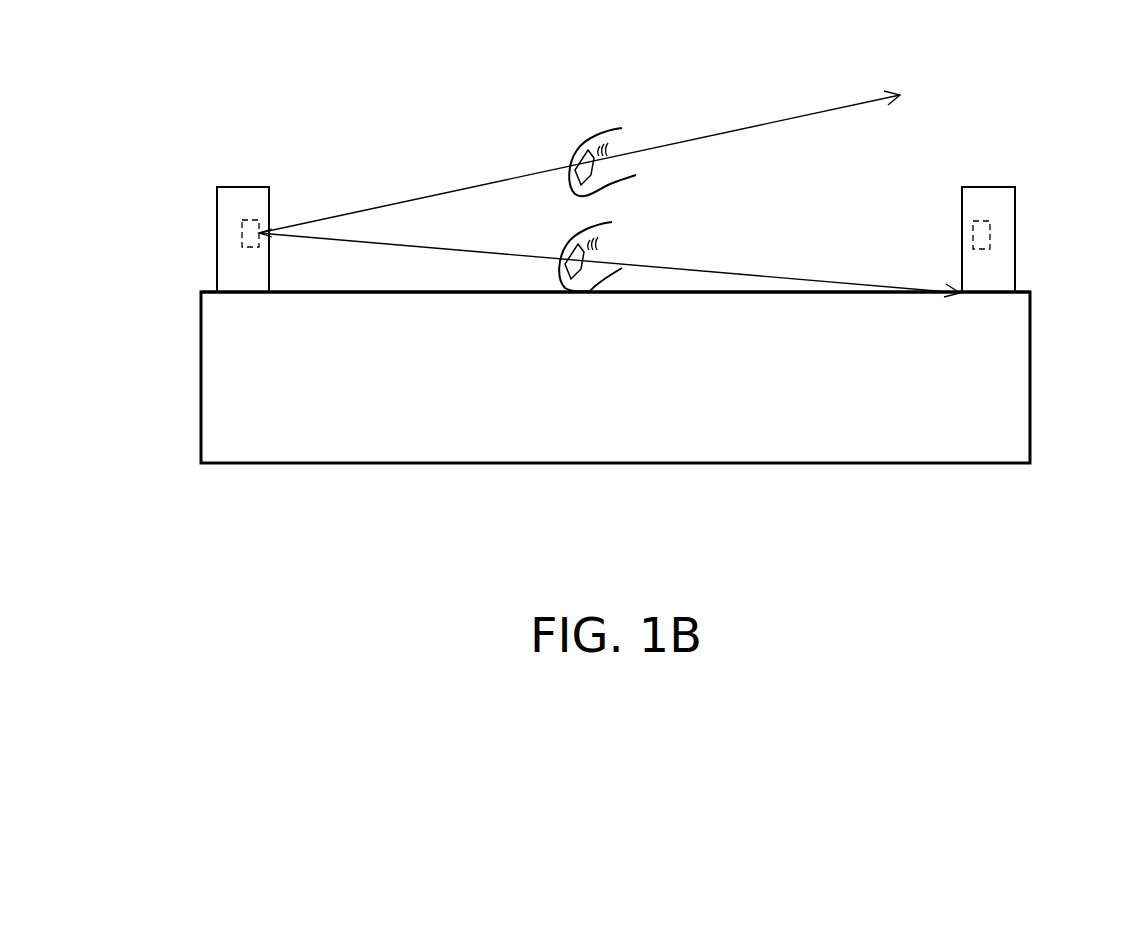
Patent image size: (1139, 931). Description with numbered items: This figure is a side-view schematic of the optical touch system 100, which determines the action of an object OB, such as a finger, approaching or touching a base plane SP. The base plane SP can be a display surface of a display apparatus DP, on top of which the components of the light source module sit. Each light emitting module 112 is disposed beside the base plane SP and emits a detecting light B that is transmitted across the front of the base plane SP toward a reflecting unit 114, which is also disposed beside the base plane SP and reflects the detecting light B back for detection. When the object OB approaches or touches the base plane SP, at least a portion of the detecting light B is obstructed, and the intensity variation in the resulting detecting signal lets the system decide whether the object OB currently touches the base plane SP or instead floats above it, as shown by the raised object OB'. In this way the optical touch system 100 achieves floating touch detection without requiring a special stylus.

The optical touch system 100 is at (1106, 570).
The display panel DP is at (1012, 384).
The reflecting unit 114 is at (244, 187).
The light emitting module 112 is at (251, 219).
The detecting light B is at (779, 118).
The base plane SP is at (330, 280).
The object OB is at (632, 254).
The object OB' is at (642, 162).